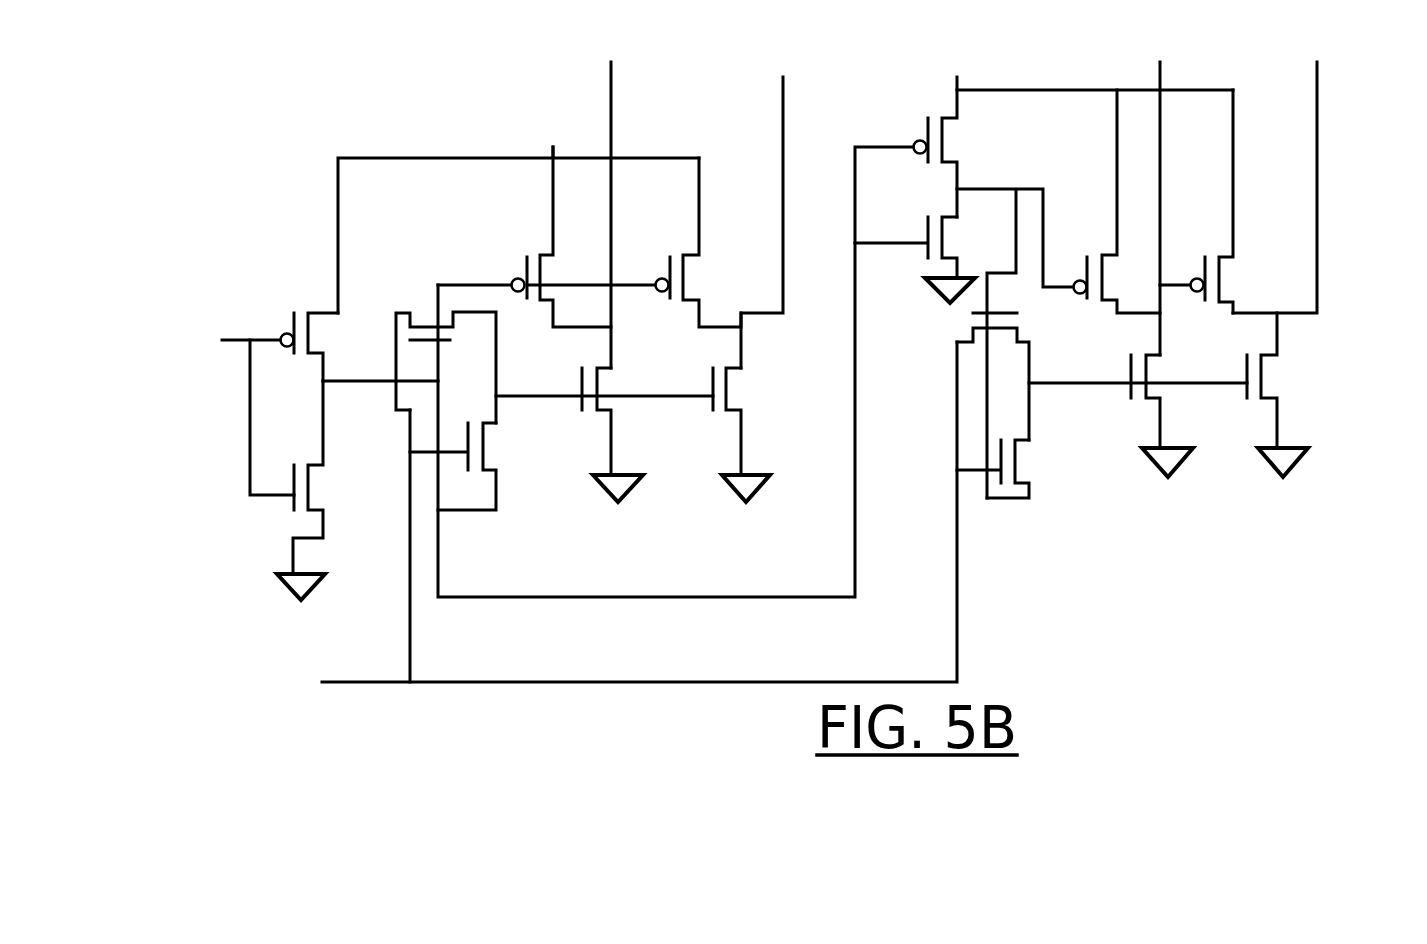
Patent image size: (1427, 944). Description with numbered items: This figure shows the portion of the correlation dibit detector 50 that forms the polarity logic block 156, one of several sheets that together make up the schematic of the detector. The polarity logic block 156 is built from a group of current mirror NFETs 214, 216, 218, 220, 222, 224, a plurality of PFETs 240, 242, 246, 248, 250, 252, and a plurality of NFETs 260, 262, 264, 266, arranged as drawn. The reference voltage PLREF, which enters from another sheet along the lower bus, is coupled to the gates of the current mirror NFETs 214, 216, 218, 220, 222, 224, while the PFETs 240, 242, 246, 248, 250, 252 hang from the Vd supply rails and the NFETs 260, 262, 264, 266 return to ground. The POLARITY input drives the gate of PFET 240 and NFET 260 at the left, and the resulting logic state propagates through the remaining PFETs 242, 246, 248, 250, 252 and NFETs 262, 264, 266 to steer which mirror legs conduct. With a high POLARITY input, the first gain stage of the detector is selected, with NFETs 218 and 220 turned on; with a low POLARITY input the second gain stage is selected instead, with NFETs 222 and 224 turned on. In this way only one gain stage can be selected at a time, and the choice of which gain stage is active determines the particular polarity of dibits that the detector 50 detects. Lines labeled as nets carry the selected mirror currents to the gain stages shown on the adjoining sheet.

The dibit detector 50 is at (1327, 602).
The polarity logic block 156 is at (560, 535).
The current mirror NFET 214 is at (479, 466).
The current mirror NFET 216 is at (1017, 469).
The current mirror NFET 218 is at (604, 435).
The current mirror NFET 220 is at (769, 438).
The current mirror NFET 222 is at (1138, 417).
The current mirror NFET 224 is at (1303, 397).
The PFET 240 is at (297, 347).
The PFET 242 is at (546, 237).
The PFET 246 is at (702, 242).
The PFET 248 is at (994, 294).
The PFET 250 is at (1117, 201).
The PFET 252 is at (1221, 201).
The NFET 260 is at (315, 472).
The NFET 262 is at (446, 367).
The NFET 264 is at (933, 269).
The NFET 266 is at (1012, 376).